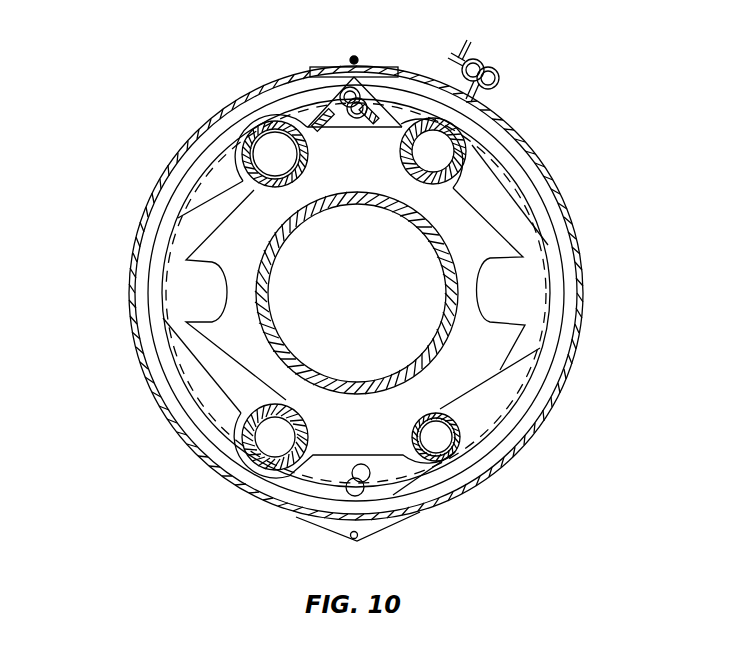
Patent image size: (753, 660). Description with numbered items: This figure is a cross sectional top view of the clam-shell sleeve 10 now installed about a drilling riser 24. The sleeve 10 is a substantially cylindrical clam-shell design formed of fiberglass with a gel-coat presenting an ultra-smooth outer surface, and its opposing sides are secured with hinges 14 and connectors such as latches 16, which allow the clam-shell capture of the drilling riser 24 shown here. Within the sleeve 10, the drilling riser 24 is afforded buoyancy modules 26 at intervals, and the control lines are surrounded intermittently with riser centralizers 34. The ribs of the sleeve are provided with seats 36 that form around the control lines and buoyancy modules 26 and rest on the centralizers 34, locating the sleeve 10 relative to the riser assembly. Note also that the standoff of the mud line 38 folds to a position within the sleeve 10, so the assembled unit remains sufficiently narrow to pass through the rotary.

The sleeve 10 is at (538, 163).
The hinges 14 is at (353, 58).
The latches 16 is at (368, 525).
The drilling riser 24 is at (277, 343).
The buoyancy modules 26 is at (475, 237).
The riser centralizers 34 is at (290, 508).
The seats 36 is at (200, 395).
The mud line 38 is at (345, 92).